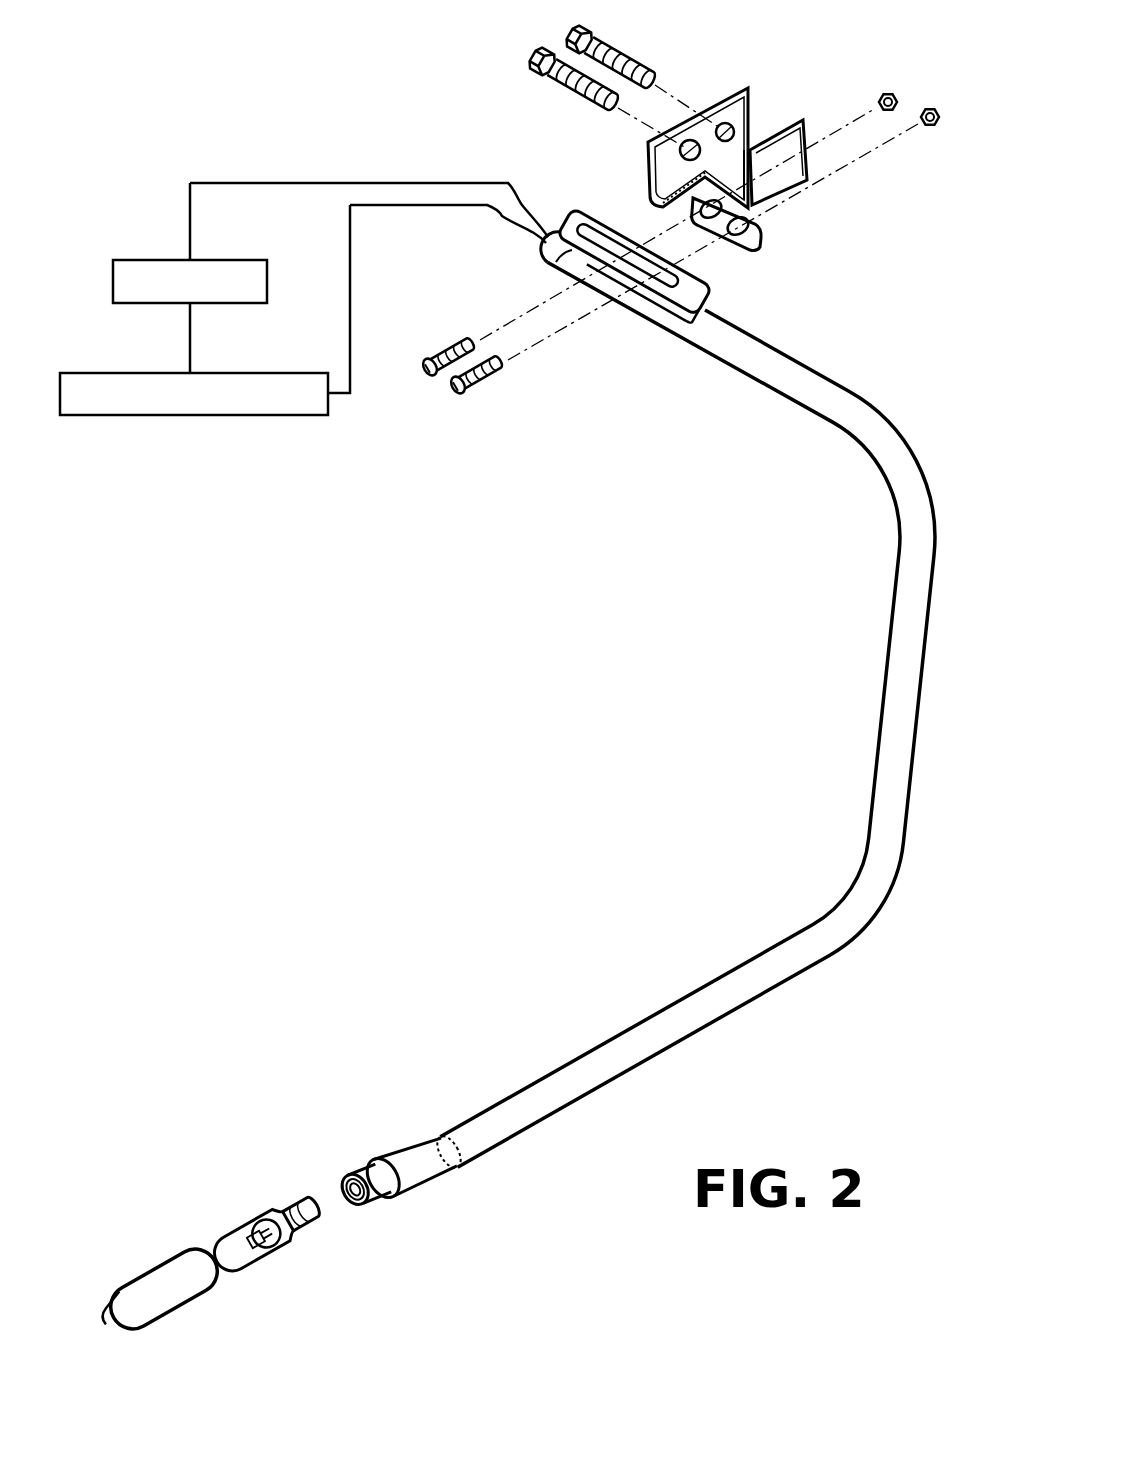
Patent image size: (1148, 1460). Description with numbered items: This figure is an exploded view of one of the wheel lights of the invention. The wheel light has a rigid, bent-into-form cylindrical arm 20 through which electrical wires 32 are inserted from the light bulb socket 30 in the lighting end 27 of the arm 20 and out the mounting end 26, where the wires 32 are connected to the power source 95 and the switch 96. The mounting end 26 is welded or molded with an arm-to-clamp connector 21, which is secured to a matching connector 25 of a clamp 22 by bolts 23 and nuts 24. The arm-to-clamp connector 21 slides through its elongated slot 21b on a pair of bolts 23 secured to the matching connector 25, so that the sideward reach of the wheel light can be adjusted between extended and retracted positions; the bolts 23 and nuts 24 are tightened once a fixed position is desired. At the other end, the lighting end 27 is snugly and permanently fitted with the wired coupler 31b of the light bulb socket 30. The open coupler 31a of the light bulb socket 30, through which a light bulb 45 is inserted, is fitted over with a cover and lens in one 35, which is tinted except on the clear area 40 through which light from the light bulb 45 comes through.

The cylindrical arm 20 is at (892, 760).
The arm-to-clamp connector 21 is at (708, 284).
The elongated slot 21b is at (668, 292).
The clamp 22 is at (752, 120).
The bolts 23 is at (538, 53).
The nuts 24 is at (930, 108).
The matching connector 25 is at (766, 237).
The mounting end 26 is at (576, 258).
The lighting end 27 is at (476, 1112).
The light bulb socket 30 is at (408, 1153).
The open coupler 31a is at (353, 1170).
The wired coupler 31b is at (466, 1162).
The electrical wires 32 is at (525, 222).
The cover and lens in one 35 is at (157, 1308).
The clear area 40 is at (111, 1293).
The light bulb 45 is at (282, 1248).
The power source 95 is at (231, 417).
The switch 96 is at (150, 263).